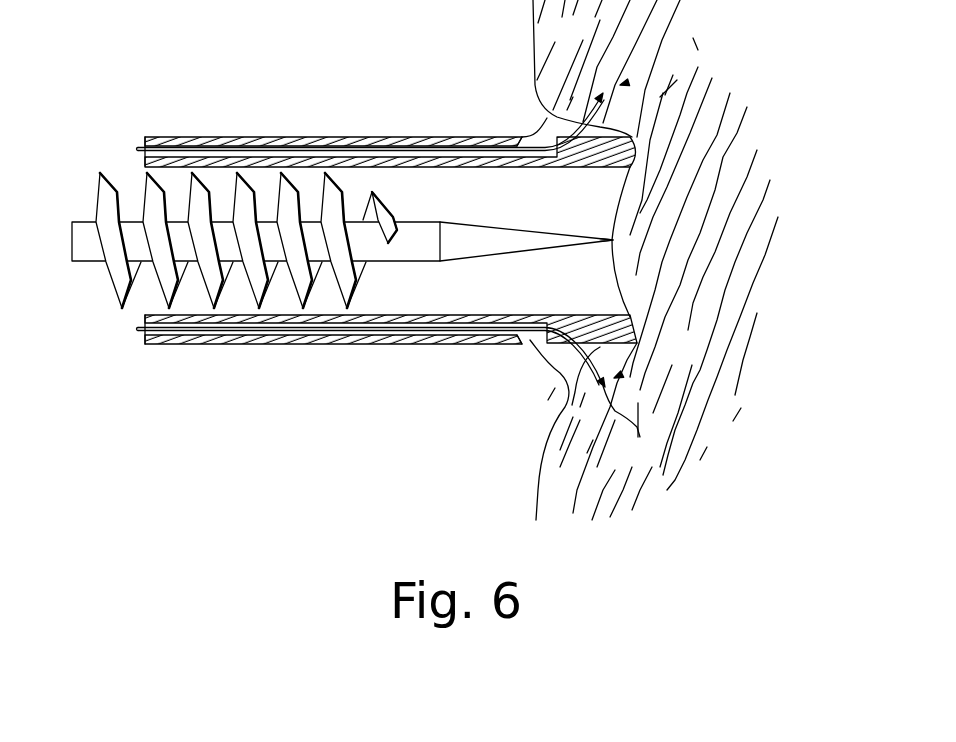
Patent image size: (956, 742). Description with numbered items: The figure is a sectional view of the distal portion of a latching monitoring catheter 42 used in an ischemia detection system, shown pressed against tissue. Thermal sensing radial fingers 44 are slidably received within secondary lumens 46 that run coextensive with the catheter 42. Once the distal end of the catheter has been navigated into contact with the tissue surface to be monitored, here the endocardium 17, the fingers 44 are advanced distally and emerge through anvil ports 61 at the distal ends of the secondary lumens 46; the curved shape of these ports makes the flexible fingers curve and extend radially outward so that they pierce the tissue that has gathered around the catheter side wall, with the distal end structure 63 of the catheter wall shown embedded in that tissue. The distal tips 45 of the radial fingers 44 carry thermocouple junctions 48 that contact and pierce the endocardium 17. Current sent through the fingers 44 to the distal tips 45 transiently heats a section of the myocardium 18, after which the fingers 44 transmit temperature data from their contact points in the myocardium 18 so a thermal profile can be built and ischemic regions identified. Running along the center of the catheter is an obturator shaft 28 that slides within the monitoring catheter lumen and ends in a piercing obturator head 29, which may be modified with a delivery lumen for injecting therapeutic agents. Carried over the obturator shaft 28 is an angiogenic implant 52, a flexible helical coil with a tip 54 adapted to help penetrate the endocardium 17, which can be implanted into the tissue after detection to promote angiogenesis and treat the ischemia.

The endocardium 17 is at (612, 217).
The myocardium 18 is at (694, 260).
The obturator shaft 28 is at (95, 252).
The piercing obturator head 29 is at (463, 262).
The latching monitoring catheter 42 is at (211, 363).
The thermal sensing radial fingers 44 is at (547, 116).
The distal tips 45 is at (632, 81).
The secondary lumens 46 is at (232, 146).
The thermocouple junctions 48 is at (602, 96).
The angiogenic implant 52 is at (121, 292).
The tip 54 is at (390, 205).
The anvil ports 61 is at (540, 138).
The inner tube distal end 63 is at (558, 152).